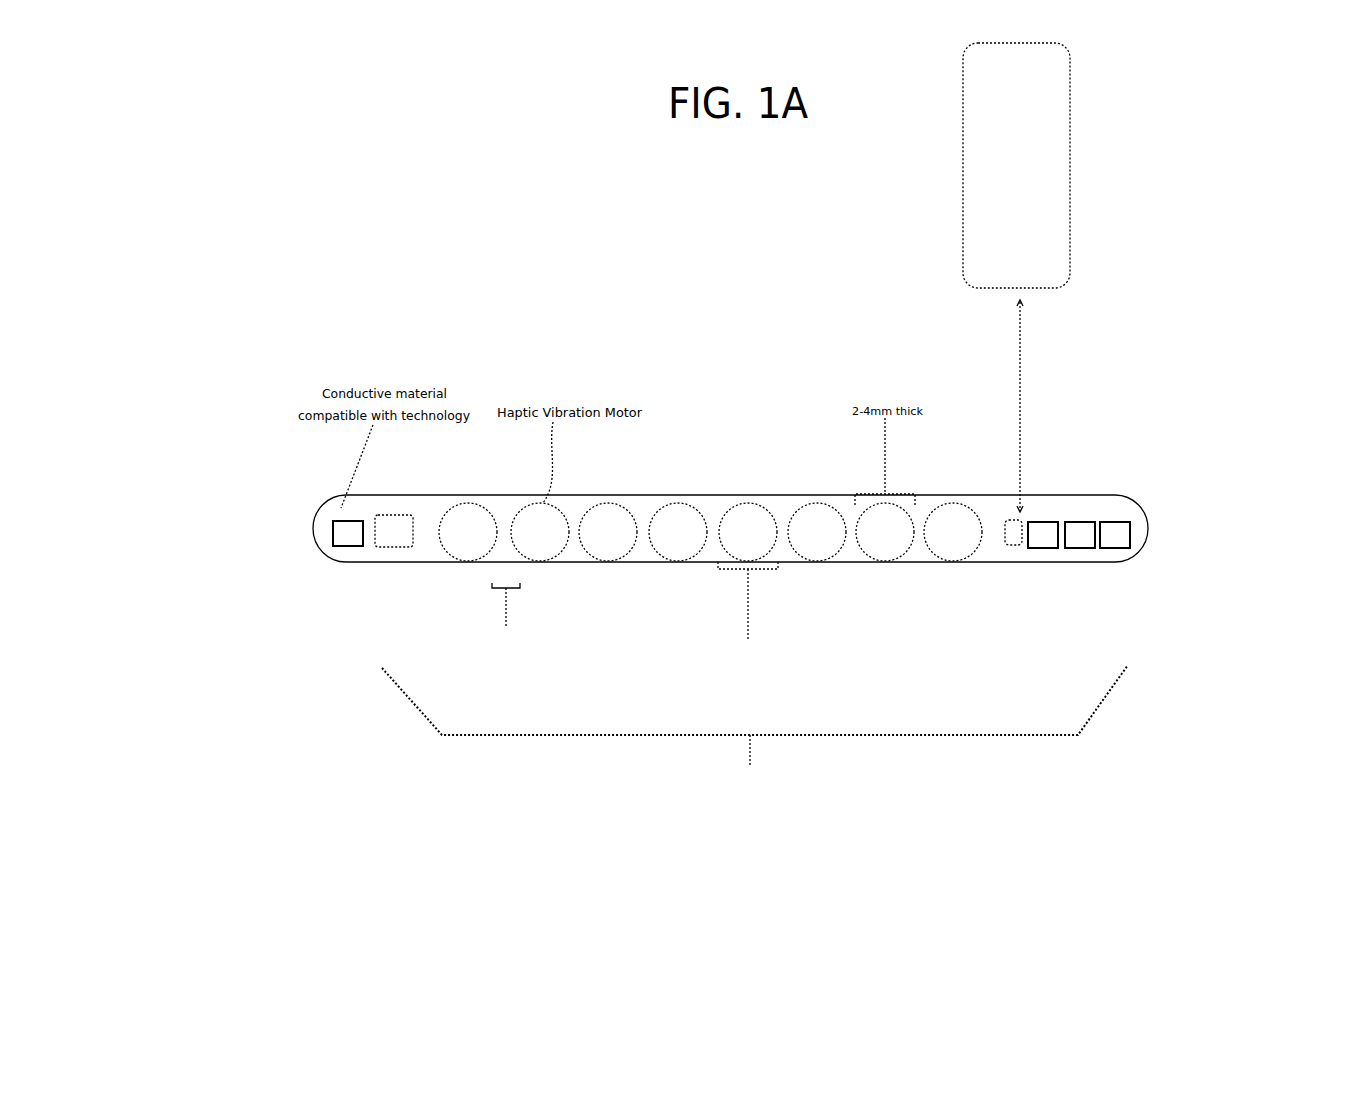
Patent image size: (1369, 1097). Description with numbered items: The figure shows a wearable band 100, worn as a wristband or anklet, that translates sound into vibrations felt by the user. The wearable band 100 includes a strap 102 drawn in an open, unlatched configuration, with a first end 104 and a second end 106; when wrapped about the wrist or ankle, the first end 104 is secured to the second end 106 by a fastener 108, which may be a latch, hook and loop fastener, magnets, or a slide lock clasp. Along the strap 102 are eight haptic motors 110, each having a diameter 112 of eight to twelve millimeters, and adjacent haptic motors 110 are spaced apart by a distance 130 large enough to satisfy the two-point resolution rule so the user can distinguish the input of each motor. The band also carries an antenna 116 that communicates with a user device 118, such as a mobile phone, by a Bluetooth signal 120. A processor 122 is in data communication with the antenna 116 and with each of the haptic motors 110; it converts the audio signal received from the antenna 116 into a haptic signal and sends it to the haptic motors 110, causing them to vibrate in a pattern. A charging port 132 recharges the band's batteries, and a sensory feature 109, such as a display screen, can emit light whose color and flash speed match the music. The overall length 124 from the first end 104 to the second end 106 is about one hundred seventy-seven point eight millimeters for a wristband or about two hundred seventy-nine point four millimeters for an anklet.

The wearable band 100 is at (535, 275).
The strap 102 is at (643, 493).
The first end 104 is at (312, 537).
The second end 106 is at (1143, 526).
The fastener 108 is at (348, 547).
The sensory feature 109 is at (1043, 548).
The haptic motors 110 is at (475, 503).
The diameter 112 is at (750, 631).
The antenna 116 is at (1020, 545).
The user device 118 is at (960, 98).
The Bluetooth signal 120 is at (1025, 412).
The processor 122 is at (397, 548).
The length 124 is at (755, 815).
The distance 130 is at (506, 631).
The charging port 132 is at (1113, 520).